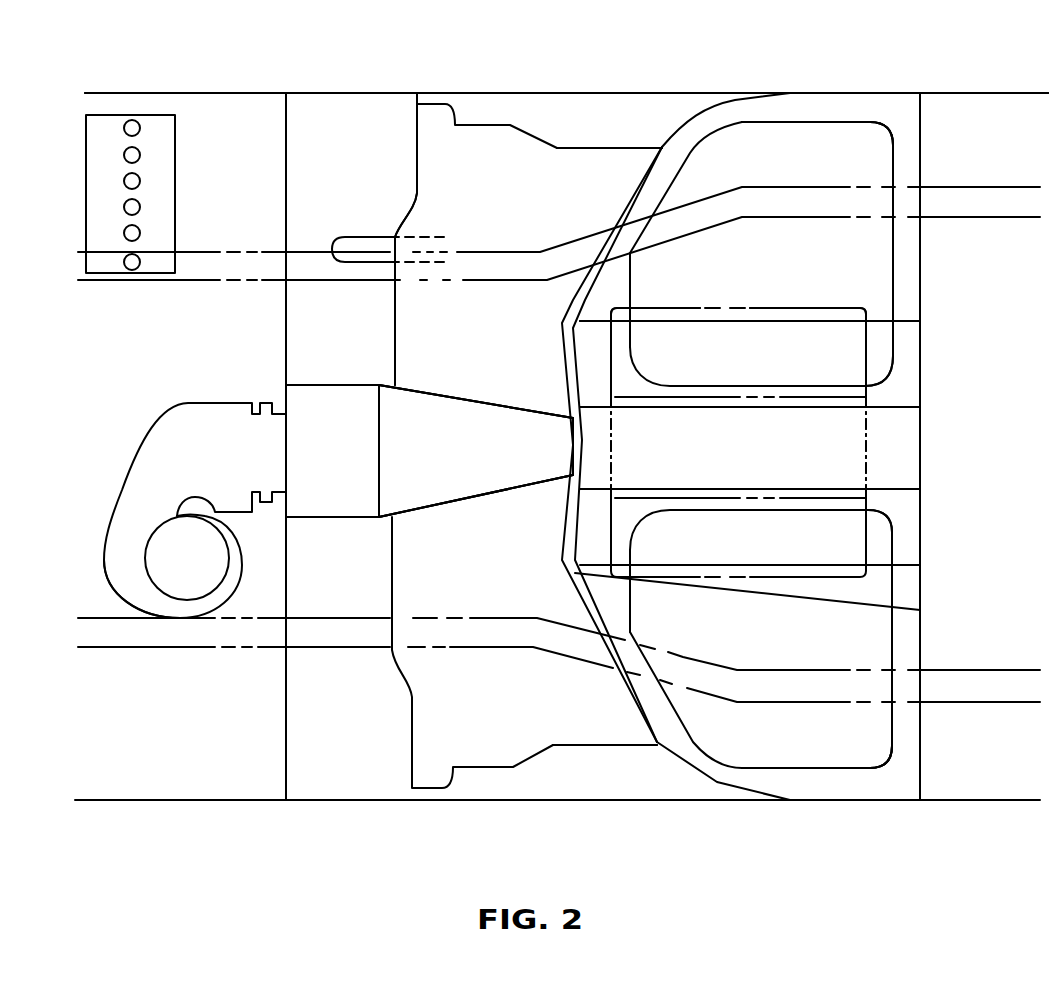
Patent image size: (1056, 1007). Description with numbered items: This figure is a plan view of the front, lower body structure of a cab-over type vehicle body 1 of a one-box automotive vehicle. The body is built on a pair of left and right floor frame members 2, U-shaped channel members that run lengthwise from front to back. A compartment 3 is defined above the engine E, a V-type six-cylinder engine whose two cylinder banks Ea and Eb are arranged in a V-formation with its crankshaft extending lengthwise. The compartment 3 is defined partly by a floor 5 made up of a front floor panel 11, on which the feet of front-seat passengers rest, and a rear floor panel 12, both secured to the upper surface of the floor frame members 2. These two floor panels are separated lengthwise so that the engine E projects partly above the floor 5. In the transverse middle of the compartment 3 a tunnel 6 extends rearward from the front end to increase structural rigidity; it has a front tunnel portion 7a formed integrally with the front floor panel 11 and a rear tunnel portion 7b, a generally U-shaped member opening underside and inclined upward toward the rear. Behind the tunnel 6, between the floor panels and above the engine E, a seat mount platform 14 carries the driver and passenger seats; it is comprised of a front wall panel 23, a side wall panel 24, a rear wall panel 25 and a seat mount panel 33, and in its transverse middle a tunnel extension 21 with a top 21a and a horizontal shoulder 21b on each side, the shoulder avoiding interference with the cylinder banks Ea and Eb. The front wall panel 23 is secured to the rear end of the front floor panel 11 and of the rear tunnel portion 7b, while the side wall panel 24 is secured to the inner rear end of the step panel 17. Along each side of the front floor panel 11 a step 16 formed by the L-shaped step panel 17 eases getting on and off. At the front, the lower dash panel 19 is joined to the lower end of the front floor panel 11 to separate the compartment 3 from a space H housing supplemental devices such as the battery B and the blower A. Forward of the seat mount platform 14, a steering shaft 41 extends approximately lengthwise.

The vehicle body 1 is at (217, 80).
The floor frame members 2 is at (497, 250).
The compartment 3 is at (485, 342).
The floor 5 is at (507, 150).
The tunnel 6 is at (418, 378).
The front tunnel portion 7a is at (315, 398).
The rear tunnel portion 7b is at (465, 395).
The front floor panel 11 is at (462, 148).
The rear floor panel 12 is at (980, 163).
The seat mount platform 14 is at (840, 103).
The step 16 is at (590, 108).
The step panel 17 is at (648, 113).
The lower dash panel 19 is at (286, 125).
The tunnel extension 21 is at (905, 395).
The top 21a is at (903, 420).
The horizontal shoulder 21b is at (913, 333).
The front wall panel 23 is at (558, 352).
The side wall panel 24 is at (750, 93).
The rear wall panel 25 is at (922, 248).
The seat mount panel 33 is at (870, 285).
The steering shaft 41 is at (360, 237).
The blower A is at (130, 477).
The battery B is at (175, 183).
The engine E is at (875, 430).
The cylinder bank Ea is at (890, 527).
The cylinder bank Eb is at (866, 357).
The space H is at (131, 388).